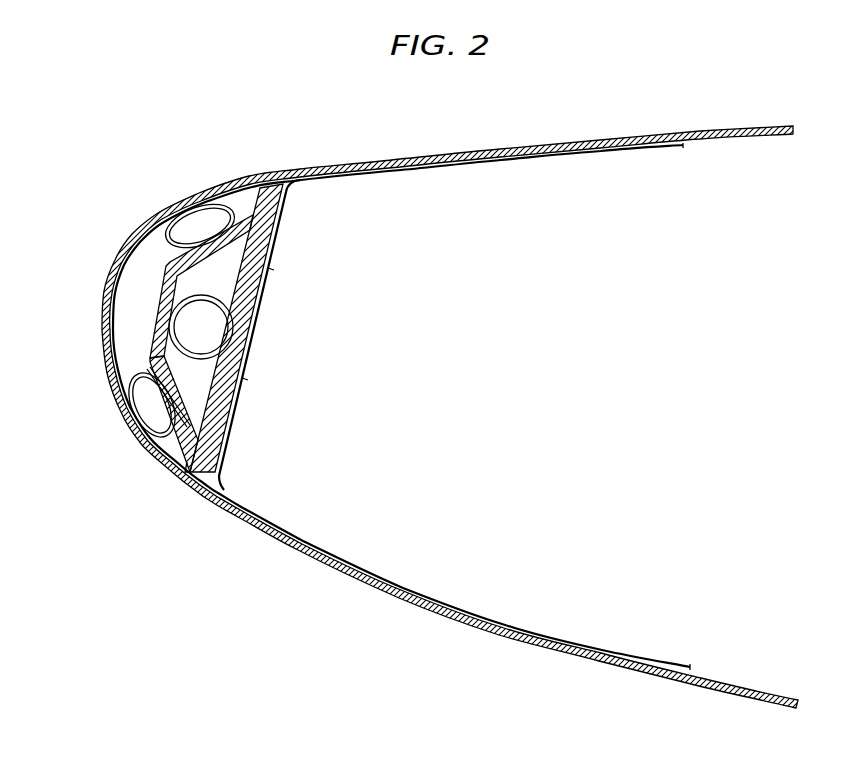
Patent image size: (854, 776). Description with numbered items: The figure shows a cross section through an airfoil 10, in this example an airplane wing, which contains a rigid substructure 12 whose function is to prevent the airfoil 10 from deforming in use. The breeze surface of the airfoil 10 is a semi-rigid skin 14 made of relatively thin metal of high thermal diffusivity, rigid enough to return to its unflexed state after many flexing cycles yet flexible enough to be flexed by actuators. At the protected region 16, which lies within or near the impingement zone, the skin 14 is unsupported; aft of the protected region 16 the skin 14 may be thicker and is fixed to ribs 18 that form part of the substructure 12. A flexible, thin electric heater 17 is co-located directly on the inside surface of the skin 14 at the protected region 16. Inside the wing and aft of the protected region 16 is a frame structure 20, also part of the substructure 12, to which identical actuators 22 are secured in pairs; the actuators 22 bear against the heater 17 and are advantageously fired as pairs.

The airfoil 10 is at (200, 575).
The substructure 12 is at (352, 349).
The skin 14 is at (256, 176).
The protected region 16 is at (103, 267).
The electric heater 17 is at (112, 302).
The ribs 18 is at (660, 150).
The frame structure 20 is at (272, 262).
The actuators 22 is at (206, 214).